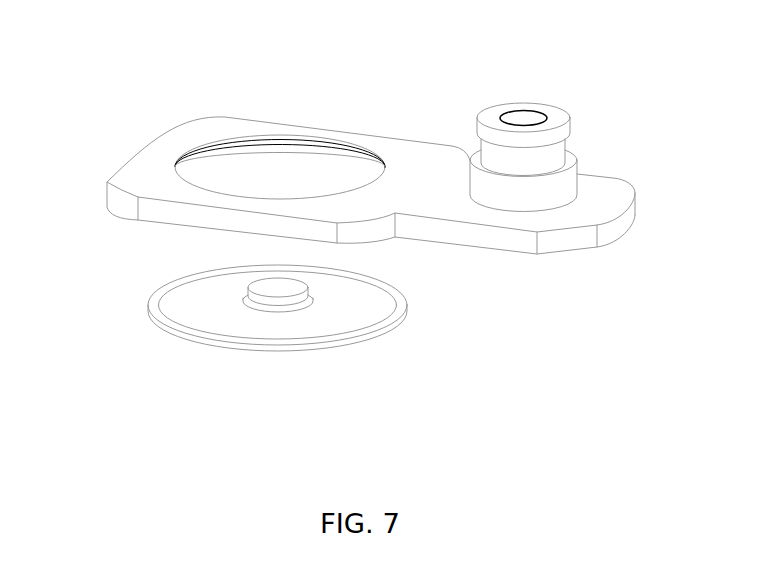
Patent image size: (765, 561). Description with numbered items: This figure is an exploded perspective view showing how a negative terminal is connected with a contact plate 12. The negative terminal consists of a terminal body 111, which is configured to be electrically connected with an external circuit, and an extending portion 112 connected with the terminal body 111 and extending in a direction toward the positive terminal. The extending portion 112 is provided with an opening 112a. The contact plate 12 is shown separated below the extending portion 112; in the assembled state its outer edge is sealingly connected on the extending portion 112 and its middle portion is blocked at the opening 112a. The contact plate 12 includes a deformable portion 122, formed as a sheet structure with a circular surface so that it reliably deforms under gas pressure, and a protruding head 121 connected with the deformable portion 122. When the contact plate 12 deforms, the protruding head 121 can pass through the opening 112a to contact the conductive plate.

The contact plate 12 is at (310, 364).
The terminal body 111 is at (558, 117).
The extending portion 112 is at (153, 180).
The opening 112a is at (320, 178).
The protruding head 121 is at (268, 294).
The deformable portion 122 is at (323, 311).